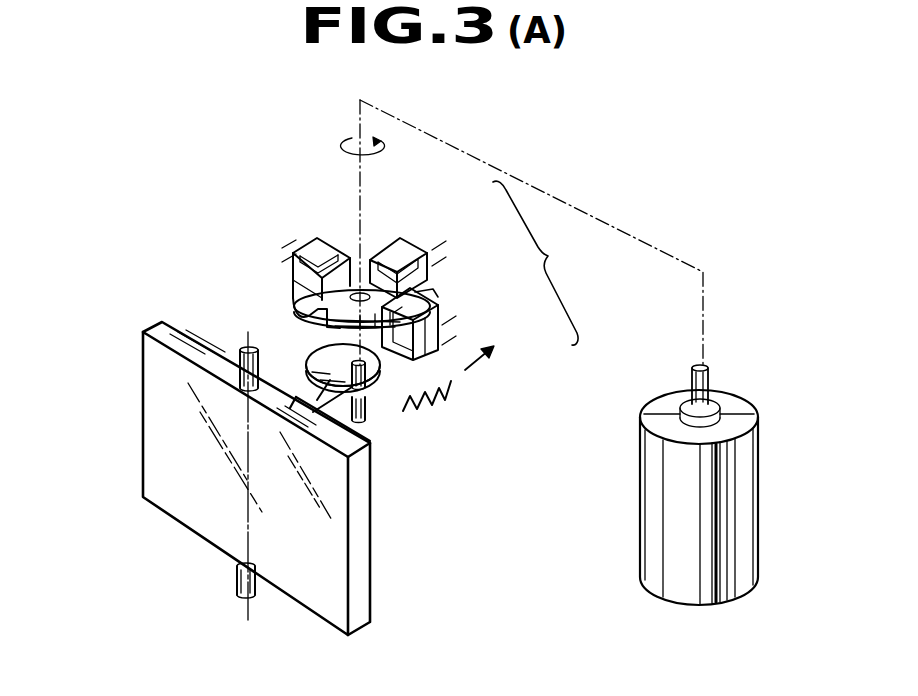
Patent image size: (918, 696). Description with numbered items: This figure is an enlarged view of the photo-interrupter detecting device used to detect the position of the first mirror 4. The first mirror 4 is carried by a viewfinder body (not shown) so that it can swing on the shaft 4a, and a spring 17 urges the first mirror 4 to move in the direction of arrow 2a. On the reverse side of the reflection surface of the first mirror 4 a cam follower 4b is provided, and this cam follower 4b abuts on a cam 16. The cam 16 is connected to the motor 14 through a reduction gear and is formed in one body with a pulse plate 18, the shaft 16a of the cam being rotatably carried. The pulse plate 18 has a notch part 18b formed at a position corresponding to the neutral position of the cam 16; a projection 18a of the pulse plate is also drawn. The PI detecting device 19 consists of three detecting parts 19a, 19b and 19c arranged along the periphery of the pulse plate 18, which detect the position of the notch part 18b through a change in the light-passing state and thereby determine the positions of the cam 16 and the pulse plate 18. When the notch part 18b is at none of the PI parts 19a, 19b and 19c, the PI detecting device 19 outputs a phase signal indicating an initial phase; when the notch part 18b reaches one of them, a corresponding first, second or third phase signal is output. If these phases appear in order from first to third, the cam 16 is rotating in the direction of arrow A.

The arrow A is at (352, 136).
The arrow 2a is at (467, 370).
The first mirror 4 is at (143, 437).
The shaft 4a is at (240, 350).
The cam follower 4b is at (307, 387).
The motor 14 is at (758, 545).
The cam 16 is at (365, 445).
The shaft 16a is at (380, 400).
The spring 17 is at (437, 403).
The pulse plate 18 is at (293, 297).
The rotor projection 18a is at (433, 289).
The notch part 18b is at (310, 328).
The photo-interrupter detecting device 19 is at (535, 263).
The detecting part 19a is at (438, 317).
The detecting part 19b is at (427, 253).
The detecting part 19c is at (360, 218).